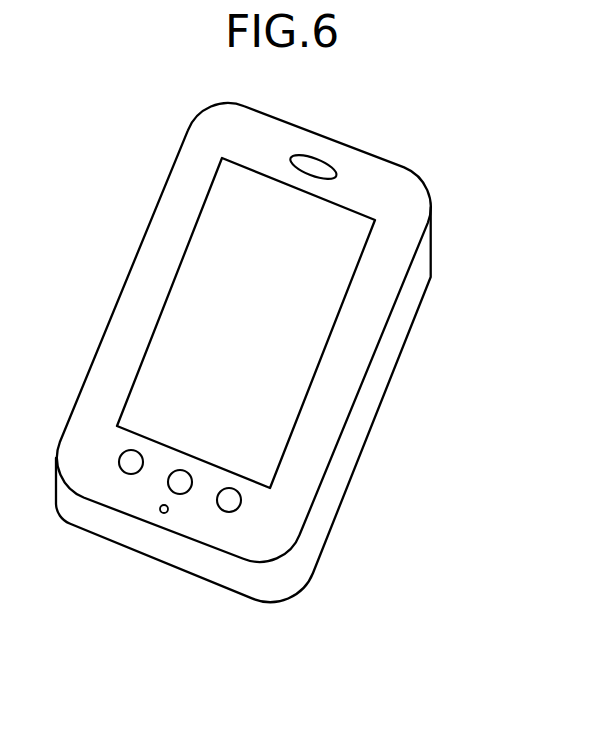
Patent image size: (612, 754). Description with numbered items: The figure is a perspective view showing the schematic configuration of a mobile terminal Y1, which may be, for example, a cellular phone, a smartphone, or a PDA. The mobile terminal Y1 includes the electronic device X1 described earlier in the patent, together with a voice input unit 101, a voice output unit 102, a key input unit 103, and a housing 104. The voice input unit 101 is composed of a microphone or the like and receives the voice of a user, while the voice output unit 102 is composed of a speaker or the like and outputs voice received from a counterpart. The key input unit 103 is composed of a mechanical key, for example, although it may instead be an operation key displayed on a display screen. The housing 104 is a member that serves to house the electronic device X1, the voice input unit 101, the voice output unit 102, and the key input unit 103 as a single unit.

The voice input unit 101 is at (164, 513).
The voice output unit 102 is at (313, 168).
The key input unit 103 is at (230, 500).
The housing 104 is at (400, 332).
The electronic device X1 is at (203, 280).
The mobile terminal Y1 is at (411, 143).